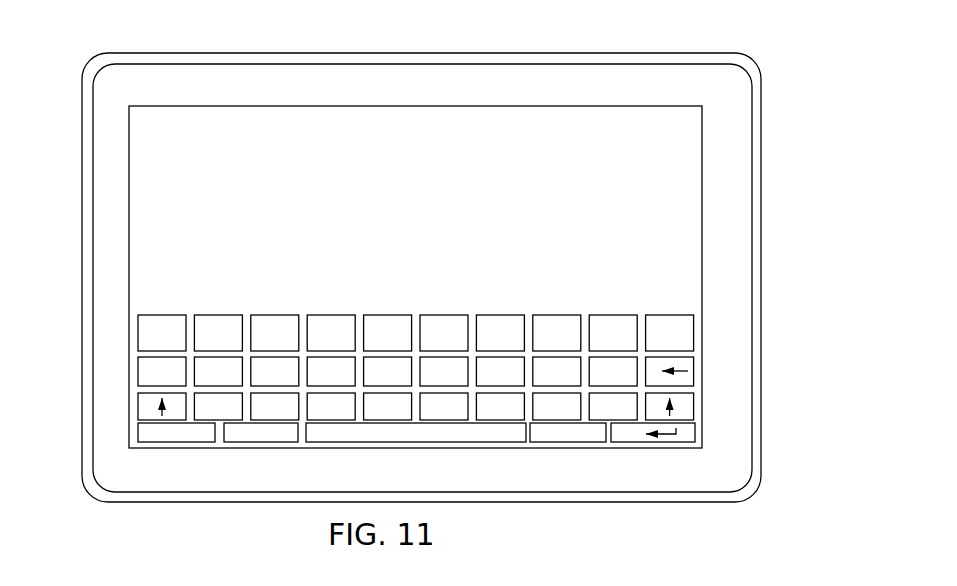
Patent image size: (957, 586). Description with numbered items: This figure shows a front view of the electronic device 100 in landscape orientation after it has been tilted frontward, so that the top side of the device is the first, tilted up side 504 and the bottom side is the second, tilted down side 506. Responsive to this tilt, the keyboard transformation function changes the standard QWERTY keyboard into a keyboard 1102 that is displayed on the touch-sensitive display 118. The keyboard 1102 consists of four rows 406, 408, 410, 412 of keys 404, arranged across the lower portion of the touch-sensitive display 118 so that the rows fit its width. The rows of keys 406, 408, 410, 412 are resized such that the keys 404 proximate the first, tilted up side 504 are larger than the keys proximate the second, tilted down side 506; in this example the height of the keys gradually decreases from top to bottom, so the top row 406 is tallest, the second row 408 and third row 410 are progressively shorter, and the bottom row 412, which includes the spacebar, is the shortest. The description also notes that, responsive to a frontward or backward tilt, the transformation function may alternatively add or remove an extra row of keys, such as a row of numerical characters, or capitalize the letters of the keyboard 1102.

The electronic device 100 is at (695, 526).
The touch-sensitive display 118 is at (705, 147).
The keys 404 is at (158, 315).
The first row of keys 406 is at (358, 299).
The second row of keys 408 is at (135, 361).
The third row of keys 410 is at (135, 395).
The fourth row of keys 412 is at (135, 429).
The first, tilted up side 504 is at (618, 53).
The second, tilted down side 506 is at (225, 502).
The keyboard 1102 is at (428, 343).